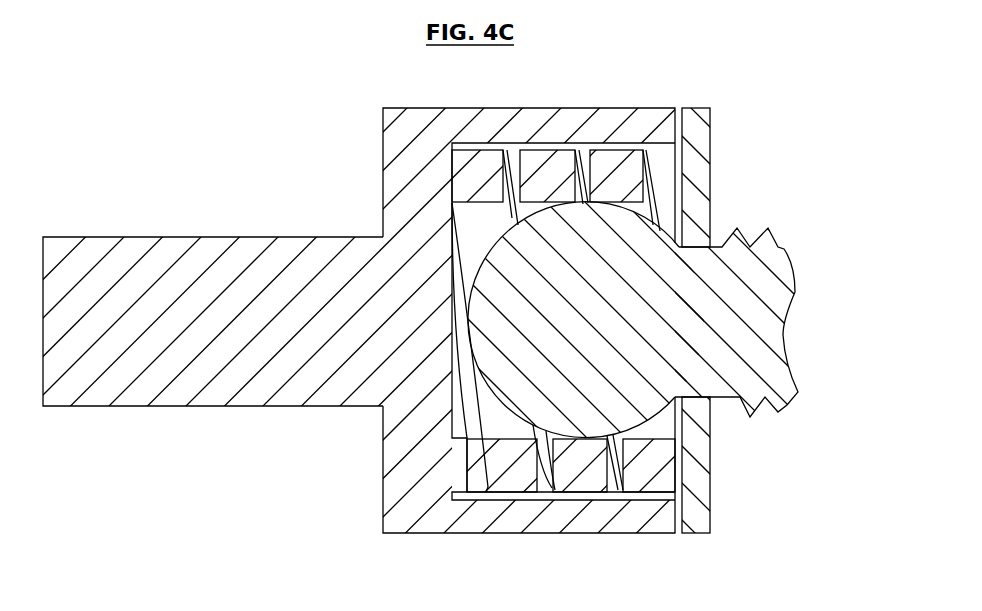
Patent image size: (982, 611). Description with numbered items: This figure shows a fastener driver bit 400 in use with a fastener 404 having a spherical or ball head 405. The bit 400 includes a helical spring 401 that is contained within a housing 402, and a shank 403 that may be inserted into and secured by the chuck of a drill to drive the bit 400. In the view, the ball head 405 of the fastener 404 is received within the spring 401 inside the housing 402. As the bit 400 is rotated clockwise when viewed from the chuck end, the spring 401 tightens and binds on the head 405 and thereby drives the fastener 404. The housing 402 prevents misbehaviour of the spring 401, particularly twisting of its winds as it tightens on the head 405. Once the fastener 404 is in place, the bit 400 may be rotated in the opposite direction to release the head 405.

The fastener driver bit 400 is at (125, 140).
The helical spring 401 is at (483, 227).
The housing 402 is at (658, 533).
The shank 403 is at (208, 407).
The fastener 404 is at (786, 172).
The ball head 405 is at (599, 313).